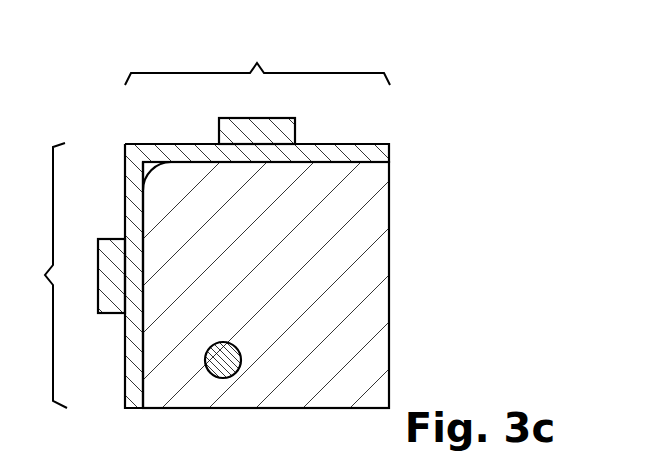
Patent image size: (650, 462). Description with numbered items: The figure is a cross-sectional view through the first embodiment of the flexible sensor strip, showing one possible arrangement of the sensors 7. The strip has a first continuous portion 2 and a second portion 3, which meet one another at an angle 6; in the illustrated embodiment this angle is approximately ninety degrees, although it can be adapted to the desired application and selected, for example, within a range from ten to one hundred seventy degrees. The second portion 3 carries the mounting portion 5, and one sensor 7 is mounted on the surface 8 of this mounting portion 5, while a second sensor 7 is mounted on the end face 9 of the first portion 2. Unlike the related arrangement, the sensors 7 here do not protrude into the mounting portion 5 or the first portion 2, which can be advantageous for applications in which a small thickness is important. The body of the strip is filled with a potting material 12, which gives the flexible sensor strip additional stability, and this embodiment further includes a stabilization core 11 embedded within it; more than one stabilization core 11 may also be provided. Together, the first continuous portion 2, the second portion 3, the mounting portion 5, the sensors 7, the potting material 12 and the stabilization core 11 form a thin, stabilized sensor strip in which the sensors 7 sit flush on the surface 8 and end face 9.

The first continuous portion 2 is at (45, 275).
The second portion 3 is at (257, 59).
The mounting portion 5 is at (386, 123).
The angle 6 is at (152, 173).
The sensor 7 is at (284, 128).
The surface 8 is at (182, 135).
The end face 9 is at (123, 349).
The stabilization core 11 is at (222, 378).
The potting material 12 is at (363, 273).